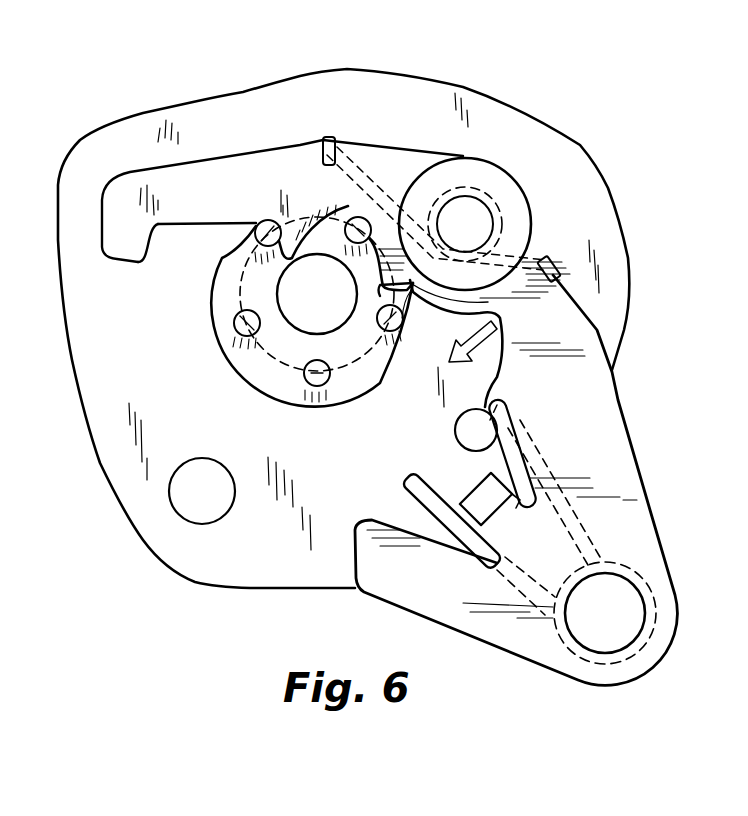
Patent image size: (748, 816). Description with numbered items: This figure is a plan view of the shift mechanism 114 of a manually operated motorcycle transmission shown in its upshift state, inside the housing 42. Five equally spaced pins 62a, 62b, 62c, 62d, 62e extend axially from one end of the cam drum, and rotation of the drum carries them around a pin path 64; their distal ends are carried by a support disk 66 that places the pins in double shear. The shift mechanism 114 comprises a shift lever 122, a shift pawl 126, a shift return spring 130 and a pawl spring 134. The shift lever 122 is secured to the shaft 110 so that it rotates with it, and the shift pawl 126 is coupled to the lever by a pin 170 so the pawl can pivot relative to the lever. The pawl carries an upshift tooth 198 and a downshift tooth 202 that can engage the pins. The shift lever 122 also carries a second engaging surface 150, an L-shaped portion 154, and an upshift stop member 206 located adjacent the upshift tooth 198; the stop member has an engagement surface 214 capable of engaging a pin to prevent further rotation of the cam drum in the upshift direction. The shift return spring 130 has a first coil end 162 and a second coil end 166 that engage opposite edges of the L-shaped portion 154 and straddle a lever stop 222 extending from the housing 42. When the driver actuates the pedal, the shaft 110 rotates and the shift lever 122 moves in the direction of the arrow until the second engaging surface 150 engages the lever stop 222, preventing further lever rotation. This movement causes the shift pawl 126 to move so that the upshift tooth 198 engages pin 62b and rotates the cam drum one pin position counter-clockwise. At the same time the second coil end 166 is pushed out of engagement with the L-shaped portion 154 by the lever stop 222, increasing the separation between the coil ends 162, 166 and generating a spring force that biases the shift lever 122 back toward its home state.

The housing 42 is at (290, 543).
The pin 62a is at (234, 324).
The pin 62b is at (272, 226).
The pin 62c is at (368, 216).
The pin 62d is at (390, 333).
The pin 62e is at (318, 388).
The pin path 64 is at (250, 383).
The support disk 66 is at (237, 352).
The shaft 110 is at (615, 608).
The shift mechanism 114 is at (505, 148).
The shift lever 122 is at (600, 488).
The shift pawl 126 is at (261, 150).
The shift return spring 130 is at (550, 457).
The pawl spring 134 is at (548, 236).
The second engaging surface 150 is at (513, 447).
The L-shaped portion 154 is at (472, 500).
The first coil end 162 is at (402, 476).
The second coil end 166 is at (497, 405).
The pin 170 is at (470, 218).
The upshift tooth 198 is at (242, 250).
The downshift tooth 202 is at (142, 260).
The upshift stop member 206 is at (490, 305).
The engagement surface 214 is at (452, 341).
The lever stop 222 is at (456, 432).